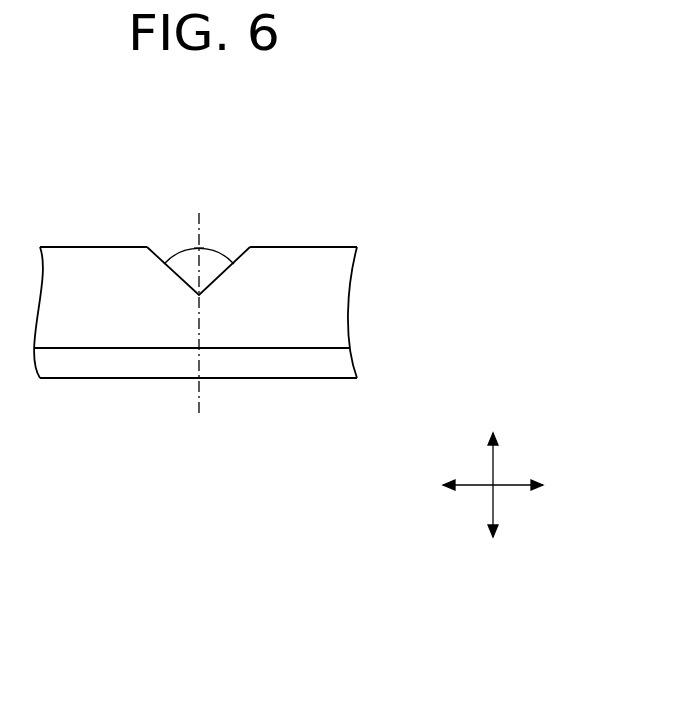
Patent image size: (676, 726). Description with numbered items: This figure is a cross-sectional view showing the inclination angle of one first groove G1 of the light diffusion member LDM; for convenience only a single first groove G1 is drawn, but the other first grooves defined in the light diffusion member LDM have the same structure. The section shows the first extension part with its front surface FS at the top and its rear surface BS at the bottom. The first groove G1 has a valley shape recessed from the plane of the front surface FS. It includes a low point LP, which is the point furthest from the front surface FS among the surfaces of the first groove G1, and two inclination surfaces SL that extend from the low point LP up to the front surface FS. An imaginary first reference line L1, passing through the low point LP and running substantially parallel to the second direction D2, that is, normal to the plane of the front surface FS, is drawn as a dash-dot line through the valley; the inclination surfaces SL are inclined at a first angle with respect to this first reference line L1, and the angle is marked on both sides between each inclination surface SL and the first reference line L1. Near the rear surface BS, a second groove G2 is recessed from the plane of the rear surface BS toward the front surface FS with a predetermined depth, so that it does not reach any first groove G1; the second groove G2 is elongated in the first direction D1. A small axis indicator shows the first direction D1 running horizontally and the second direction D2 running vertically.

The light diffusion member LDM is at (350, 285).
The front surface FS is at (327, 248).
The rear surface BS is at (320, 378).
The second groove G2 is at (327, 348).
The first groove G1 is at (202, 191).
The inclination surface SL is at (158, 253).
The first reference line L1 is at (198, 327).
The low point LP is at (199, 295).
The first direction D1 is at (507, 487).
The second direction D2 is at (493, 471).